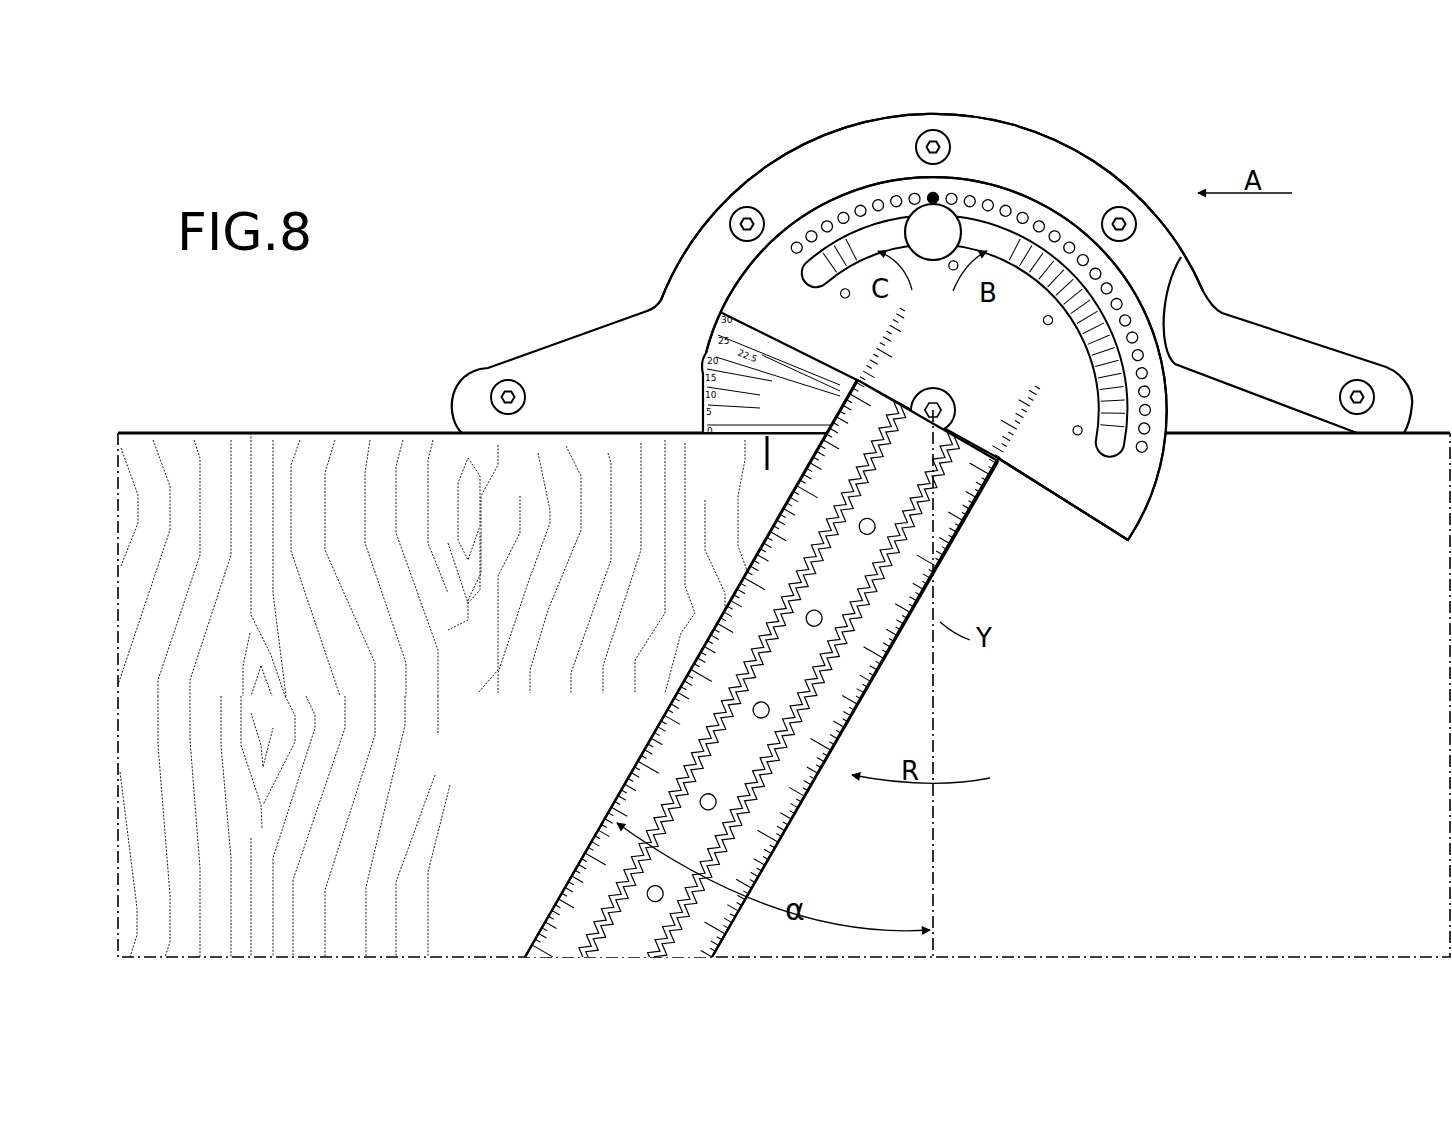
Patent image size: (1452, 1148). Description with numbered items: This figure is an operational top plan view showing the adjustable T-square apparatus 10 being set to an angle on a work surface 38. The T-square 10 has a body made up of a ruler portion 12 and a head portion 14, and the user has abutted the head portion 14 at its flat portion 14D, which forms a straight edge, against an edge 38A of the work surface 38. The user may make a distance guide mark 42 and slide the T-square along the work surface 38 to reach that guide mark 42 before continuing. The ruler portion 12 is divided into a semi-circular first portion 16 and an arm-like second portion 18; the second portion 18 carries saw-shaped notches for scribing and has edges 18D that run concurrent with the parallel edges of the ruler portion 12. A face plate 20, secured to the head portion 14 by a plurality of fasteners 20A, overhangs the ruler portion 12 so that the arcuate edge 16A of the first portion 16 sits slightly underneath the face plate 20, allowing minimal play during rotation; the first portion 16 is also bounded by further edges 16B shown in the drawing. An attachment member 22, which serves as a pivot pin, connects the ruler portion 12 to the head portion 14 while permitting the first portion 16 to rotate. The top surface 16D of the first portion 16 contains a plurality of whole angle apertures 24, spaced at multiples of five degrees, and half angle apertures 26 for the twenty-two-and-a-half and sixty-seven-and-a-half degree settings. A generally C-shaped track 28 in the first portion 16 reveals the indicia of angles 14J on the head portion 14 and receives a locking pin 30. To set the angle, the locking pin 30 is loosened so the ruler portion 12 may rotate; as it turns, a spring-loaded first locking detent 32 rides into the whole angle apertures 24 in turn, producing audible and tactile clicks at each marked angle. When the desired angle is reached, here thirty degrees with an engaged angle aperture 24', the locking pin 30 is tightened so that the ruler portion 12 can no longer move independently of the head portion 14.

The adjustable T-square apparatus 10 is at (1126, 146).
The ruler portion 12 is at (642, 722).
The head portion 14 is at (1210, 440).
The flat portion 14D is at (588, 438).
The indicia of angles 14J is at (714, 306).
The first portion 16 is at (1160, 496).
The arcuate edge 16A is at (936, 358).
The protractor body edge 16B is at (804, 352).
The top surface 16D is at (1060, 437).
The second portion 18 is at (628, 770).
The edges 18D is at (790, 832).
The face plate 20 is at (766, 160).
The fasteners 20A is at (736, 212).
The attachment member 22 is at (952, 396).
The whole angle apertures 24 is at (1032, 323).
The engaged angle aperture 24' is at (946, 123).
The half angle apertures 26 is at (843, 298).
The track 28 is at (806, 283).
The locking pin 30 is at (931, 262).
The first locking detent 32 is at (933, 198).
The work surface 38 is at (338, 634).
The edge 38A is at (240, 432).
The distance guide mark 42 is at (764, 442).